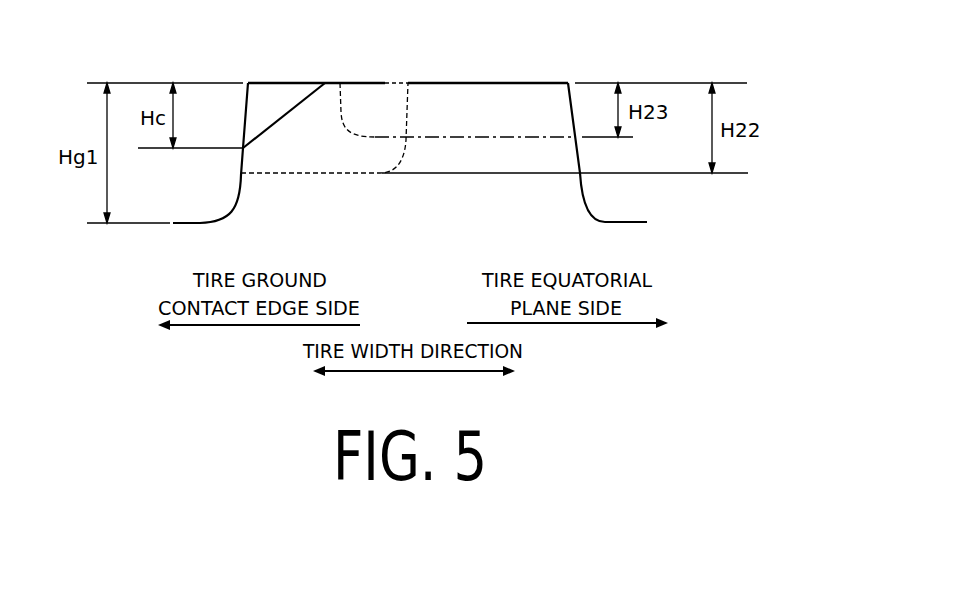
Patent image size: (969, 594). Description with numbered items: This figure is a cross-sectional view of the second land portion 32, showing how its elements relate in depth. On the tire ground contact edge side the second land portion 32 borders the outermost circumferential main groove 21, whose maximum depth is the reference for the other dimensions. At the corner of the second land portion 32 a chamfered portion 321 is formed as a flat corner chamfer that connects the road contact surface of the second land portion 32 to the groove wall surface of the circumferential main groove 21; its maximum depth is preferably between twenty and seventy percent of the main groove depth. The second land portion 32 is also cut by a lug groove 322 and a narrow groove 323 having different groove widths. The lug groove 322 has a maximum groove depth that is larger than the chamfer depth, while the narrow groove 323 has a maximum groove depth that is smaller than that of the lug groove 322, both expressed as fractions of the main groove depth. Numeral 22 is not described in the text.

The circumferential main groove 21 is at (200, 110).
The center land portion 22 is at (597, 108).
The second land portion 32 is at (512, 77).
The chamfered portion 321 is at (277, 120).
The lug groove 322 is at (332, 130).
The narrow groove 323 is at (467, 108).